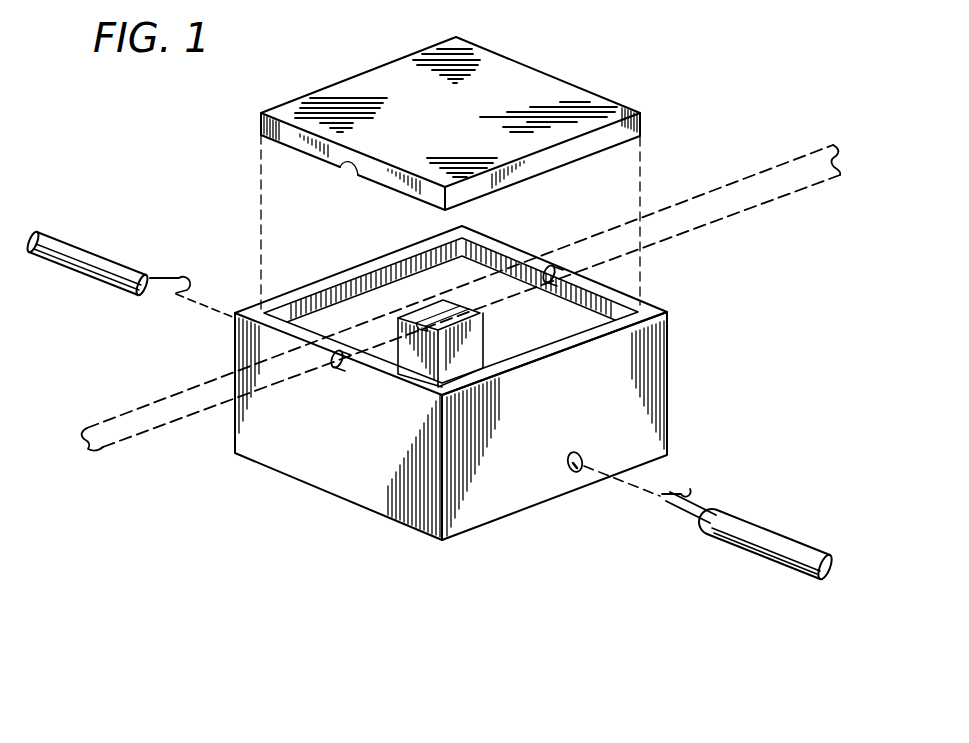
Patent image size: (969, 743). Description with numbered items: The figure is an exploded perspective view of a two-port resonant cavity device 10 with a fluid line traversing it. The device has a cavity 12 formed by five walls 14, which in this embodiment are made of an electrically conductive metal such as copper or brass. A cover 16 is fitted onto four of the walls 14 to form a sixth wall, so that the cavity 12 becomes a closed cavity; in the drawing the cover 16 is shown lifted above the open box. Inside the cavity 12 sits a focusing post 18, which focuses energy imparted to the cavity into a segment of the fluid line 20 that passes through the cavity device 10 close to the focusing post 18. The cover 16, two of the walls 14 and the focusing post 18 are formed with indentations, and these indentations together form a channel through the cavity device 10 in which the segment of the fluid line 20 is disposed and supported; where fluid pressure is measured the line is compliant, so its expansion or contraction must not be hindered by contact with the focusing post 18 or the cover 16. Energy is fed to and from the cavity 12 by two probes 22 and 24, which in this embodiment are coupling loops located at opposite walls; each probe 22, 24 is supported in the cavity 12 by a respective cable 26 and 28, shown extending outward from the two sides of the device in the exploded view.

The resonant cavity device 10 is at (243, 512).
The cavity 12 is at (645, 302).
The walls 14 is at (632, 377).
The cover 16 is at (523, 78).
The focusing post 18 is at (487, 342).
The fluid line 20 is at (697, 195).
The probe 22 is at (187, 273).
The probe 24 is at (686, 488).
The cable 26 is at (95, 248).
The cable 28 is at (797, 538).